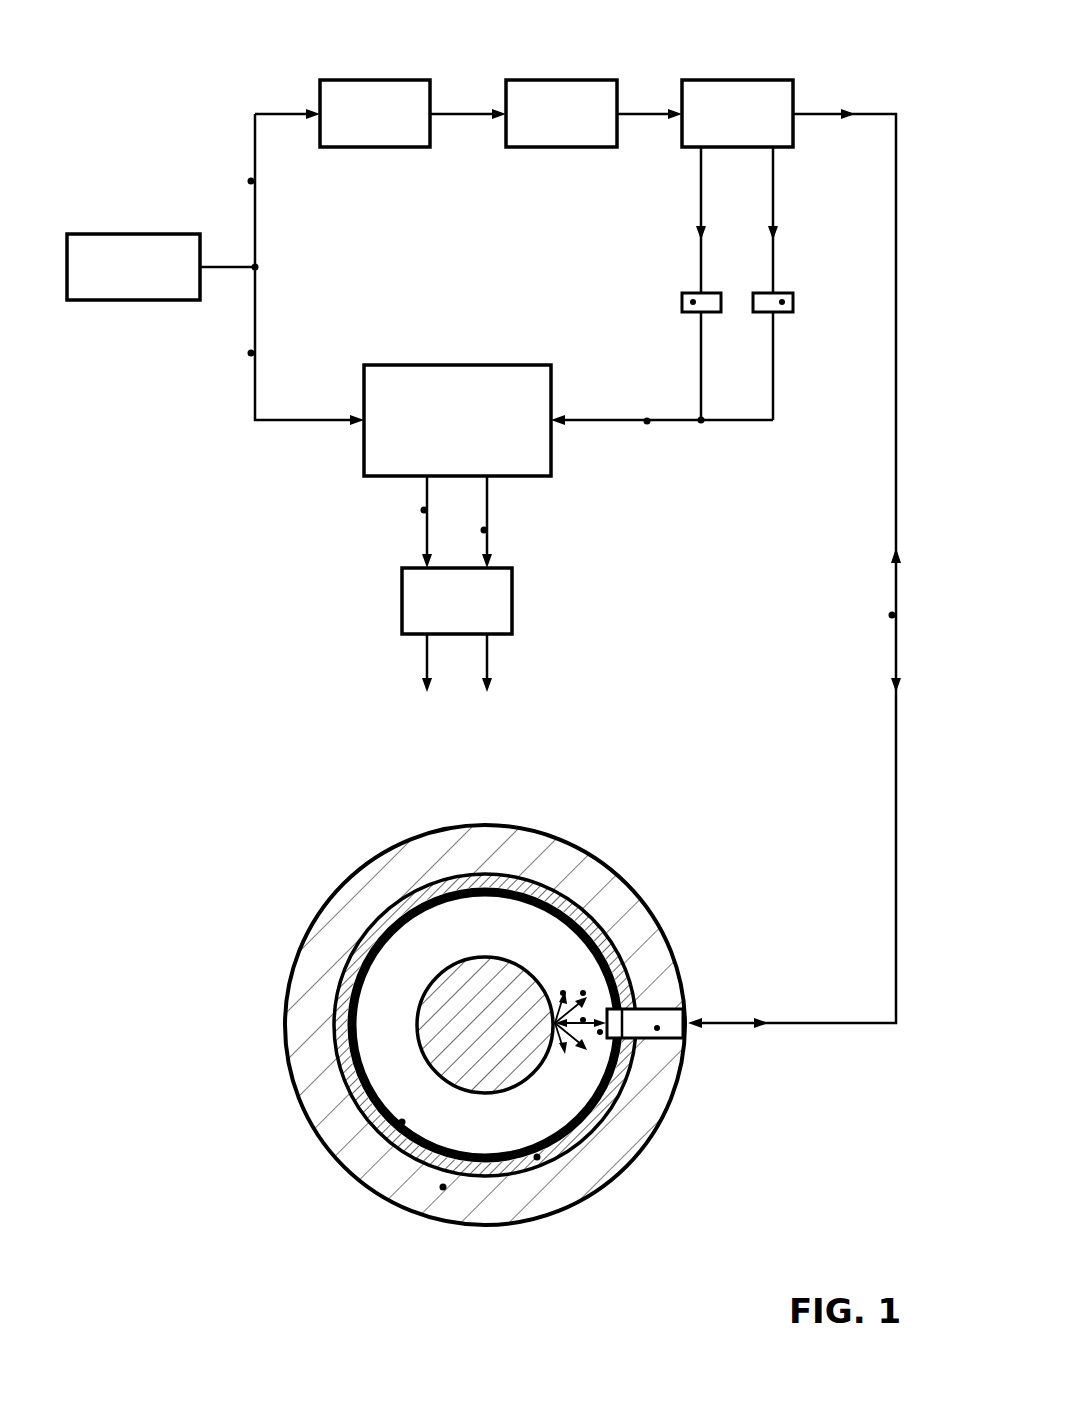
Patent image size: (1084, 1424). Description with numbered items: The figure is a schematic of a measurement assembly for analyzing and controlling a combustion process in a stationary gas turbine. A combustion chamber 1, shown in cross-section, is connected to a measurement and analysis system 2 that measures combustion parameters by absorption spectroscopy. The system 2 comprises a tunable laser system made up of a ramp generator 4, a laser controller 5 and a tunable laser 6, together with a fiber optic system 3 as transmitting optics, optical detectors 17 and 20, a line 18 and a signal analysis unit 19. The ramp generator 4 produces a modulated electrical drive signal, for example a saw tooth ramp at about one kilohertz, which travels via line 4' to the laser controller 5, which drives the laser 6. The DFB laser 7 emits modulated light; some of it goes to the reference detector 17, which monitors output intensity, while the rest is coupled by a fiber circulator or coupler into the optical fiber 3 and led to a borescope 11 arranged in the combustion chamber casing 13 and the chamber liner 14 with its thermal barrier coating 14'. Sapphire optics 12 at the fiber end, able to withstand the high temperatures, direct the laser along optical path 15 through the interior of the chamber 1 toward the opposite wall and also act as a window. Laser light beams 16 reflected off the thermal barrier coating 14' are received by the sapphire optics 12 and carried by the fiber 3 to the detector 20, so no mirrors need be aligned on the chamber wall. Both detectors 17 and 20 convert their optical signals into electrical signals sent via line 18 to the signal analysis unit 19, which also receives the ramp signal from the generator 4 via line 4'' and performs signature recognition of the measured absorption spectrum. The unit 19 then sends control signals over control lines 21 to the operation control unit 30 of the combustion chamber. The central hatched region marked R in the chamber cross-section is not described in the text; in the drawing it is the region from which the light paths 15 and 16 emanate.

The combustion chamber 1 is at (112, 855).
The measurement and analysis system 2 is at (115, 32).
The fiber optic system 3 is at (890, 614).
The ramp generator 4 is at (163, 267).
The signal line 4' is at (210, 190).
The signal line 4'' is at (265, 346).
The laser controller 5 is at (385, 130).
The tunable laser 6 is at (571, 130).
The DFB laser 7 is at (747, 130).
The borescope 11 is at (660, 1031).
The sapphire optics 12 is at (601, 1035).
The combustion chamber casing 13 is at (442, 1190).
The chamber liner 14 is at (485, 1097).
The thermal barrier coating 14' is at (425, 1061).
The optical path 15 is at (585, 1017).
The reflected laser light beams 16 is at (583, 993).
The reference detector 17 is at (784, 301).
The line 18 is at (648, 424).
The signal analysis unit 19 is at (438, 436).
The detector 20 is at (691, 301).
The control lines 21 is at (482, 530).
The control unit 30 is at (438, 618).
The radiation source R is at (497, 1041).